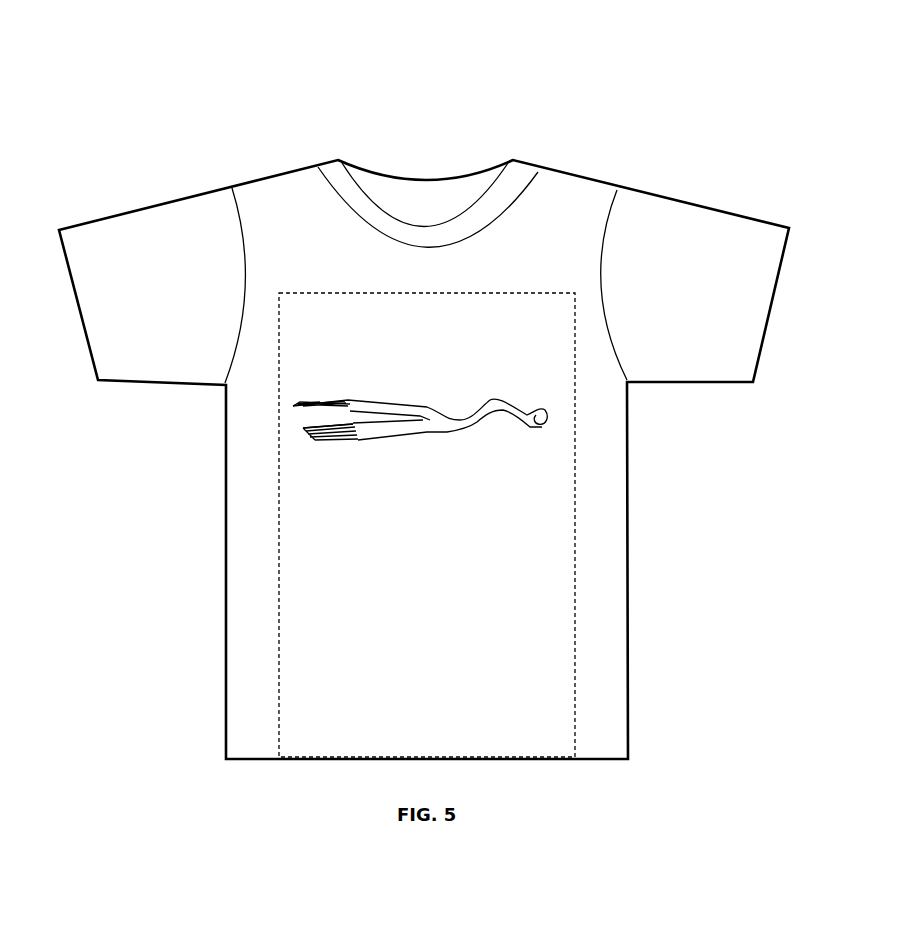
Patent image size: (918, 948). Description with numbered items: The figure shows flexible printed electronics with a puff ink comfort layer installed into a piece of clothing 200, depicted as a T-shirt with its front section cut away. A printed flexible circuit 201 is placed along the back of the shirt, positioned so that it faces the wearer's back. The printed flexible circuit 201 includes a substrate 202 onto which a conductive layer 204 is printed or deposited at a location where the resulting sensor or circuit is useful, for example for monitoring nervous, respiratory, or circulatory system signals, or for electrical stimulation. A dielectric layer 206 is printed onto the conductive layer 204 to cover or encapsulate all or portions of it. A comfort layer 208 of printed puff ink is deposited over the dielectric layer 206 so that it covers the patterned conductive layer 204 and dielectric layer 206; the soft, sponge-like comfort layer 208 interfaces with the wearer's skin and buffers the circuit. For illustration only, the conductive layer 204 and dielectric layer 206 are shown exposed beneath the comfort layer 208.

The clothing 200 is at (173, 187).
The printed flexible circuit 201 is at (393, 322).
The substrate 202 is at (408, 542).
The conductive layer 204 is at (345, 437).
The dielectric layer 206 is at (307, 403).
The comfort layer 208 is at (483, 397).